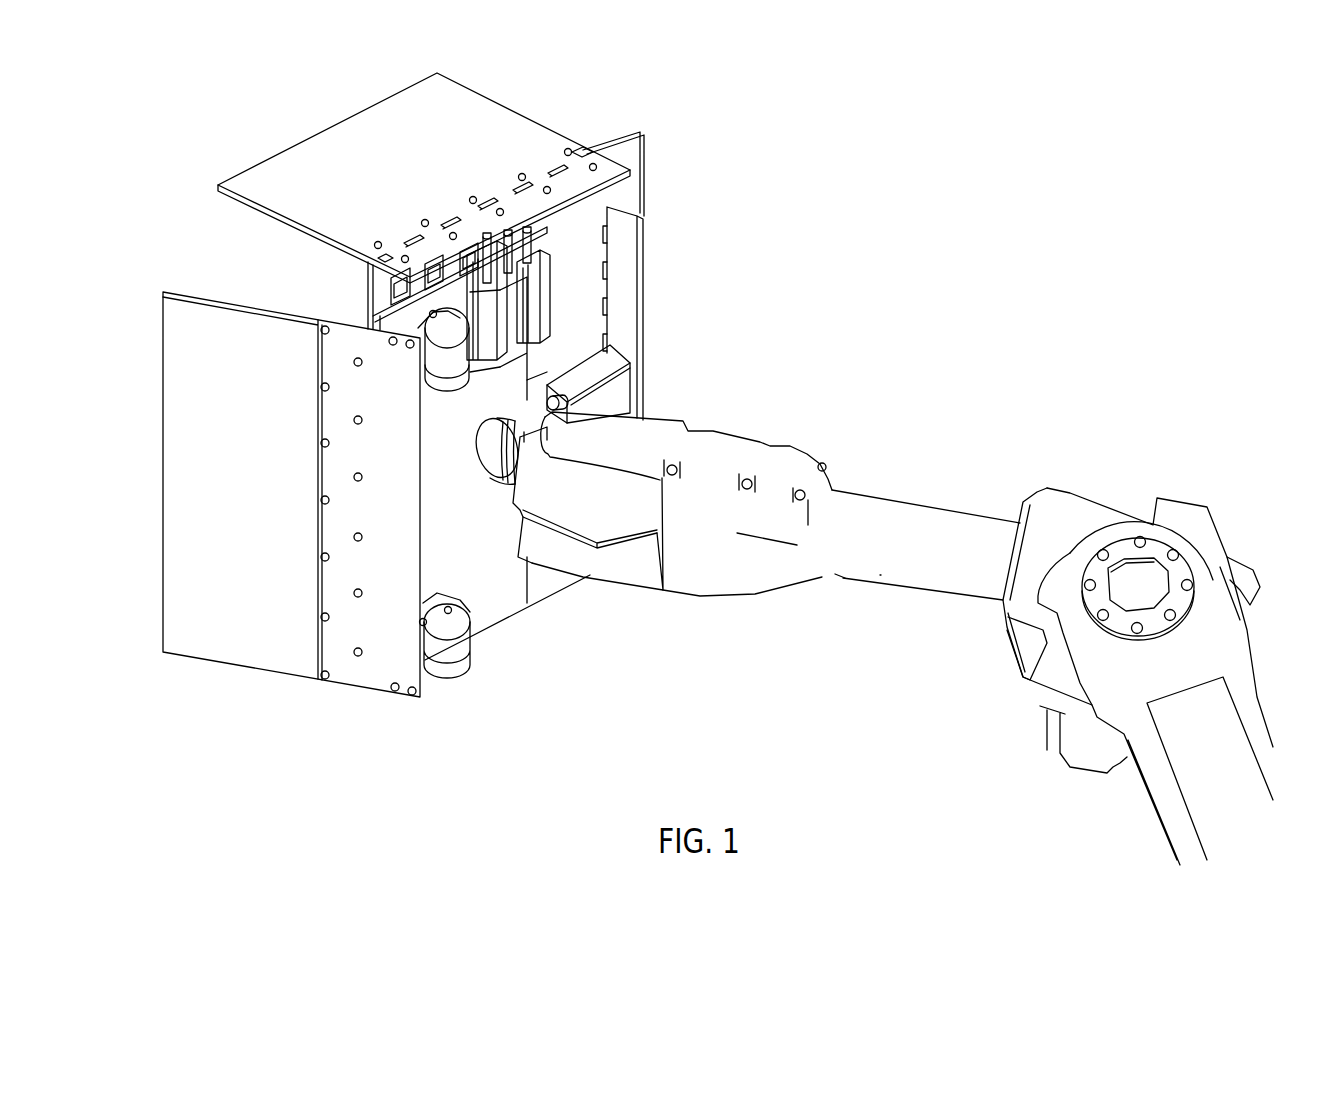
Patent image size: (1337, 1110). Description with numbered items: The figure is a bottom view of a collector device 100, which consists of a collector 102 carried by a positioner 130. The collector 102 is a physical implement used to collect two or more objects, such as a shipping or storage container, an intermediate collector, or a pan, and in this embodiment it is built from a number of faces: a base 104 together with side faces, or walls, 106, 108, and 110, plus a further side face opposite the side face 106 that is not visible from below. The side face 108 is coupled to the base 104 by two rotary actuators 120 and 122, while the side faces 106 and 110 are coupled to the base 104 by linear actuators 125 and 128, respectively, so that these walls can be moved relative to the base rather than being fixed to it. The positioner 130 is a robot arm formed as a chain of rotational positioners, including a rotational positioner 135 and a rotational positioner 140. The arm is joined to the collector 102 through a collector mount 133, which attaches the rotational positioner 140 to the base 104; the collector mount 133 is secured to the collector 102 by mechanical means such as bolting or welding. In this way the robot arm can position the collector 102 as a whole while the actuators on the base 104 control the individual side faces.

The collector device 100 is at (923, 725).
The collector 102 is at (343, 293).
The base 104 is at (500, 603).
The side face 106 is at (298, 158).
The side face 108 is at (253, 655).
The side face 110 is at (643, 271).
The rotary actuator 120 is at (440, 660).
The rotary actuator 122 is at (433, 370).
The linear actuator 125 is at (510, 317).
The linear actuator 128 is at (612, 352).
The positioner 130 is at (926, 499).
The collector mount 133 is at (490, 453).
The rotational positioner 135 is at (745, 560).
The rotational positioner 140 is at (600, 532).